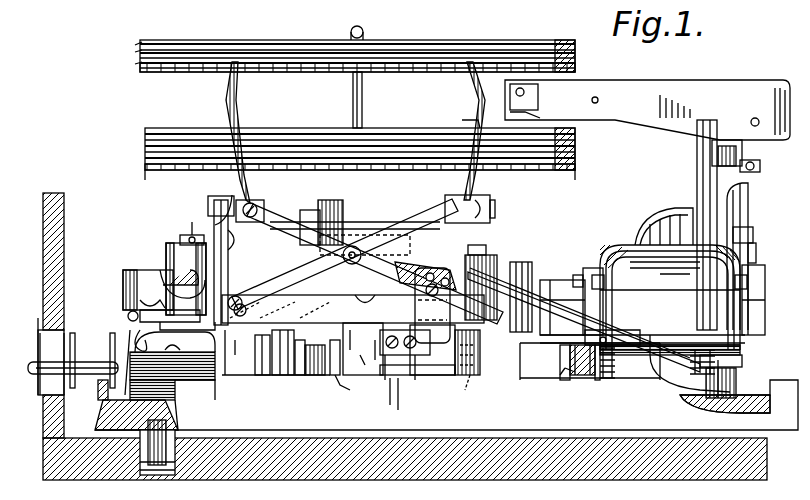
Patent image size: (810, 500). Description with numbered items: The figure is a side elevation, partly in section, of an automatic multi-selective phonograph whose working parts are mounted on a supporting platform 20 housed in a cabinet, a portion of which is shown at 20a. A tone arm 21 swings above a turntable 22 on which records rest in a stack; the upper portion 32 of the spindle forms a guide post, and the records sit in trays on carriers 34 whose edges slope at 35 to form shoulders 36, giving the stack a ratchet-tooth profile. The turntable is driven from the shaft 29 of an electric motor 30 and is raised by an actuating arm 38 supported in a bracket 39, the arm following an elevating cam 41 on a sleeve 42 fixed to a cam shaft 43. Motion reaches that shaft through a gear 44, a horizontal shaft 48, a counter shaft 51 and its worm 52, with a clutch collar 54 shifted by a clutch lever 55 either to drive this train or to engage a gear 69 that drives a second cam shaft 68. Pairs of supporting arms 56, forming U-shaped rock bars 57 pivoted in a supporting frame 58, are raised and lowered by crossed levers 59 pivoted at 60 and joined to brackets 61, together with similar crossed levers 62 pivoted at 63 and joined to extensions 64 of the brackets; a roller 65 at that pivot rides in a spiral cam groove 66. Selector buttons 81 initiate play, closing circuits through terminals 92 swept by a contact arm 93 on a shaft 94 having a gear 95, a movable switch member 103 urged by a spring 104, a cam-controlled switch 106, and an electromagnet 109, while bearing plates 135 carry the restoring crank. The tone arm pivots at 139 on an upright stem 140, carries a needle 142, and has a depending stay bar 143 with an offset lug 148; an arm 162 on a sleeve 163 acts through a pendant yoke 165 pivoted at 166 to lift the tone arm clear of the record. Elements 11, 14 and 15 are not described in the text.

The relay mechanism 11 is at (330, 345).
The upper roller 14 is at (250, 72).
The pivot pin 15 is at (363, 250).
The supporting platform 20 is at (420, 430).
The cabinet portion 20a is at (67, 252).
The tone arm 21 is at (647, 110).
The turntable 22 is at (556, 171).
The motor shaft 29 is at (585, 262).
The electric motor 30 is at (669, 300).
The spindle upper portion 32 is at (363, 103).
The record carriers 34 is at (445, 200).
The sloping tray edge 35 is at (138, 58).
The tray shoulders 36 is at (576, 58).
The actuating arm 38 is at (525, 300).
The bracket 39 is at (742, 372).
The elevating cam 41 is at (556, 270).
The cam sleeve 42 is at (532, 243).
The cam shaft 43 is at (480, 243).
The gear 44 is at (380, 323).
The horizontal shaft 48 is at (347, 378).
The counter shaft 51 is at (432, 380).
The worm 52 is at (465, 373).
The clutch collar 54 is at (283, 380).
The clutch lever 55 is at (315, 378).
The supporting arms 56 is at (225, 116).
The rock bar 57 is at (282, 215).
The supporting frame 58 is at (310, 212).
The crossed levers 59 is at (405, 268).
The lever pivot 60 is at (335, 258).
The brackets 61 is at (463, 320).
The crossed levers 62 is at (229, 232).
The lever pivot 63 is at (243, 258).
The bracket extensions 64 is at (178, 272).
The roller 65 is at (210, 205).
The cam groove 66 is at (185, 265).
The cam shaft 68 is at (186, 225).
The gear 69 is at (258, 380).
The selector buttons 81 is at (27, 355).
The terminals 92 is at (590, 380).
The contact arm 93 is at (628, 345).
The contact arm shaft 94 is at (595, 332).
The gear 95 is at (580, 380).
The movable switch member 103 is at (164, 305).
The spring 104 is at (138, 332).
The switch 106 is at (522, 385).
The electromagnet 109 is at (405, 370).
The bearing plates 135 is at (122, 279).
The tone arm pivot 139 is at (755, 118).
The upright stem 140 is at (712, 146).
The reproducing needle 142 is at (453, 121).
The stay bar 143 is at (697, 185).
The offset lug 148 is at (648, 212).
The arm 162 is at (765, 292).
The sleeve 163 is at (754, 238).
The pendant yoke 165 is at (750, 207).
The yoke pivot 166 is at (760, 166).